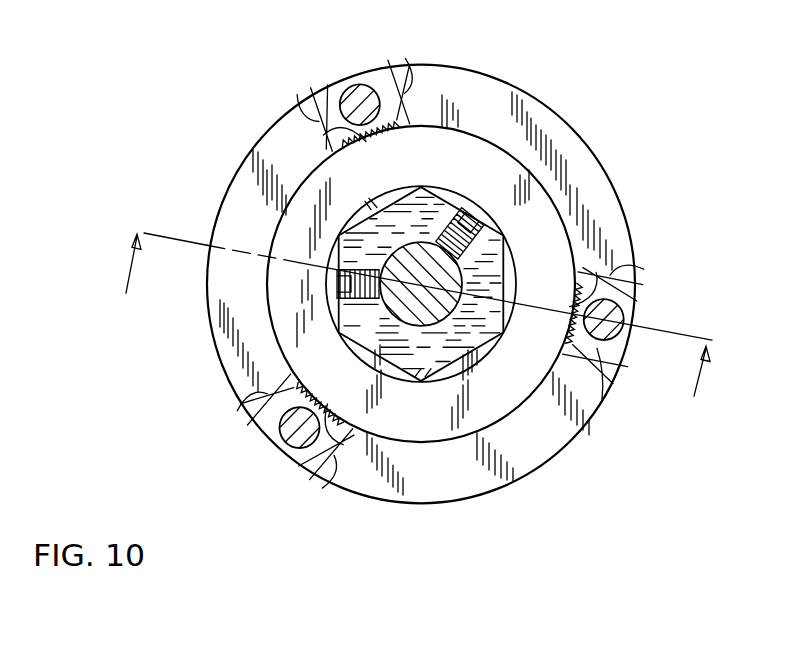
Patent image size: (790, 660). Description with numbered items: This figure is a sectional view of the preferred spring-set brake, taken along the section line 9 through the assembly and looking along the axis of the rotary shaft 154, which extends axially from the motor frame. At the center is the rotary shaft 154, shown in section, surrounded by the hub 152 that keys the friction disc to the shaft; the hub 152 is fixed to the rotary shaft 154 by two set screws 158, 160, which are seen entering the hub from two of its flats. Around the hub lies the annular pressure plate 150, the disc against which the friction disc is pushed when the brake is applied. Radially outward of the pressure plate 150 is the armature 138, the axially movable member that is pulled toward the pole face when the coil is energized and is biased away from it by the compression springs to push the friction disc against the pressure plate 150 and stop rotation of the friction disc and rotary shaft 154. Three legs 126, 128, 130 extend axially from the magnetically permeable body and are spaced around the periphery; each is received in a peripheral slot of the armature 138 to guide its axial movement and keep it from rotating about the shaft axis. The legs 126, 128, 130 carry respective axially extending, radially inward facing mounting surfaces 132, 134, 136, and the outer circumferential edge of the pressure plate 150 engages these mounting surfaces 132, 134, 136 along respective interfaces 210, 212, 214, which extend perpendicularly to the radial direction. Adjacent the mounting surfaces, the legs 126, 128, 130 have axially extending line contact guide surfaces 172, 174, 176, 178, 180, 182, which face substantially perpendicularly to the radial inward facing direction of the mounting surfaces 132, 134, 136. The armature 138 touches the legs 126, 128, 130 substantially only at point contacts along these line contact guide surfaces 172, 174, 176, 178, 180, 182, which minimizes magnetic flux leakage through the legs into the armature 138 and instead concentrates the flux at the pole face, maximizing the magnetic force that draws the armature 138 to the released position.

The line 9— 9 is at (419, 300).
The leg 126 is at (636, 310).
The leg 128 is at (278, 446).
The leg 130 is at (362, 85).
The mounting surface 132 is at (556, 350).
The mounting surface 134 is at (278, 389).
The mounting surface 136 is at (322, 137).
The armature 138 is at (590, 177).
The pressure plate 150 is at (421, 430).
The hub 152 is at (428, 207).
The rotary shaft 154 is at (460, 299).
The set screw 158 is at (470, 226).
The set screw 160 is at (334, 304).
The line contact guide surface 172 is at (641, 270).
The line contact guide surface 174 is at (610, 396).
The line contact guide surface 176 is at (338, 460).
The line contact guide surface 178 is at (262, 399).
The line contact guide surface 180 is at (297, 104).
The line contact guide surface 182 is at (414, 72).
The interface 210 is at (575, 290).
The interface 212 is at (343, 413).
The interface 214 is at (370, 150).